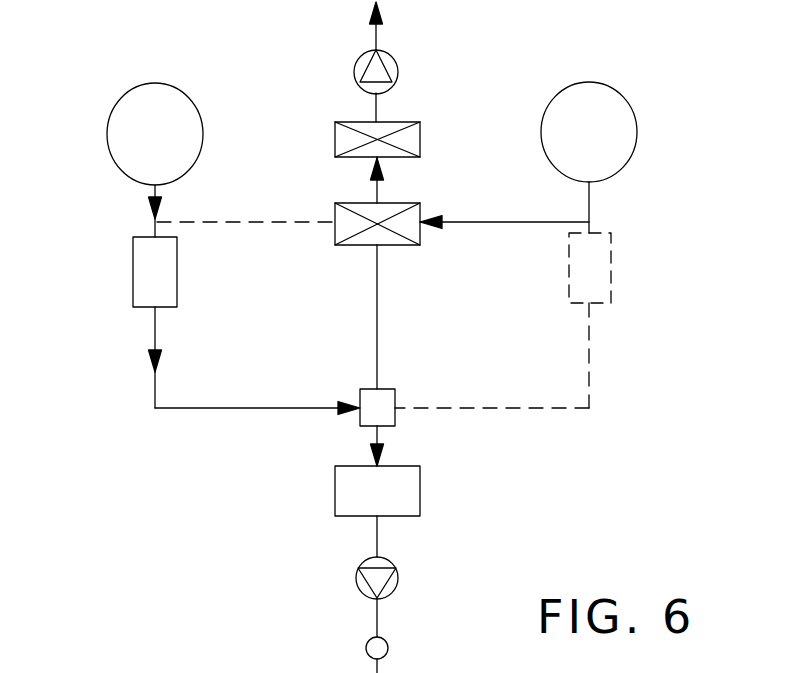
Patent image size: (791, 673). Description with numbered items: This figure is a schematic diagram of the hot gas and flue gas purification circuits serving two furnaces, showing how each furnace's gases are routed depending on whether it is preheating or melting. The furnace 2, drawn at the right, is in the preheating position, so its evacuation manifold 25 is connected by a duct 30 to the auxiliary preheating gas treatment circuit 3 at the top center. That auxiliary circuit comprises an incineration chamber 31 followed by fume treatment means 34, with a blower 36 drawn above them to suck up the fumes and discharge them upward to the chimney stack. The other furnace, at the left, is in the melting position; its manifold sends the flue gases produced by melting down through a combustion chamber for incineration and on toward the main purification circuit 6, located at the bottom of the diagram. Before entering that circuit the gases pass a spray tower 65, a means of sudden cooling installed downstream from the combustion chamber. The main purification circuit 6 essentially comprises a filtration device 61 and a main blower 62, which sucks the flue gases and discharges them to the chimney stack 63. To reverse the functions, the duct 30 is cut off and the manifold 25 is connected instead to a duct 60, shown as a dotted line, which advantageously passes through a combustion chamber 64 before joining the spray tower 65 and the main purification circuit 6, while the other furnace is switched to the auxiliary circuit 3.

The furnace 2 is at (648, 95).
The auxiliary preheating gas treatment circuit 3 is at (318, 88).
The main purification circuit 6 is at (352, 539).
The evacuation manifold 25 is at (590, 193).
The duct 30 is at (263, 220).
The incineration chamber 31 is at (405, 203).
The fume treatment means 34 is at (402, 122).
The pump 36 is at (357, 62).
The duct 60 is at (589, 335).
The filtration device 61 is at (420, 492).
The main blower 62 is at (398, 577).
The chimney stack 63 is at (388, 648).
The combustion chamber 64 is at (611, 264).
The spray tower 65 is at (385, 389).